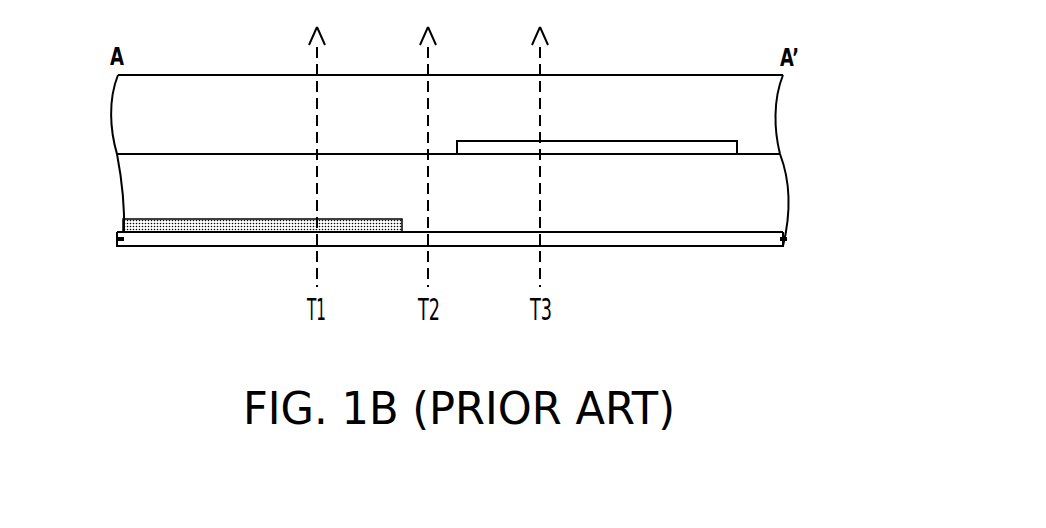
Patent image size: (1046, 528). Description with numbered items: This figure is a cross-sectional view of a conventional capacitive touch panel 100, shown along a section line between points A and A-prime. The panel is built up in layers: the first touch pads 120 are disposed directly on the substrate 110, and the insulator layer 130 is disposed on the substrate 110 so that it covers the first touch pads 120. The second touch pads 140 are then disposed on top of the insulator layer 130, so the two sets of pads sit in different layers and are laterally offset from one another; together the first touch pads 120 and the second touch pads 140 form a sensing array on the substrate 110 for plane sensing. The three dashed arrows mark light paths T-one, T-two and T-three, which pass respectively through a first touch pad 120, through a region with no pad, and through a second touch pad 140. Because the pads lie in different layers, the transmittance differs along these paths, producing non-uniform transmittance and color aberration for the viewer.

The capacitive touch panel 100 is at (773, 328).
The substrate 110 is at (765, 243).
The first touch pads 120 is at (123, 233).
The insulator layer 130 is at (775, 197).
The second touch pads 140 is at (742, 151).